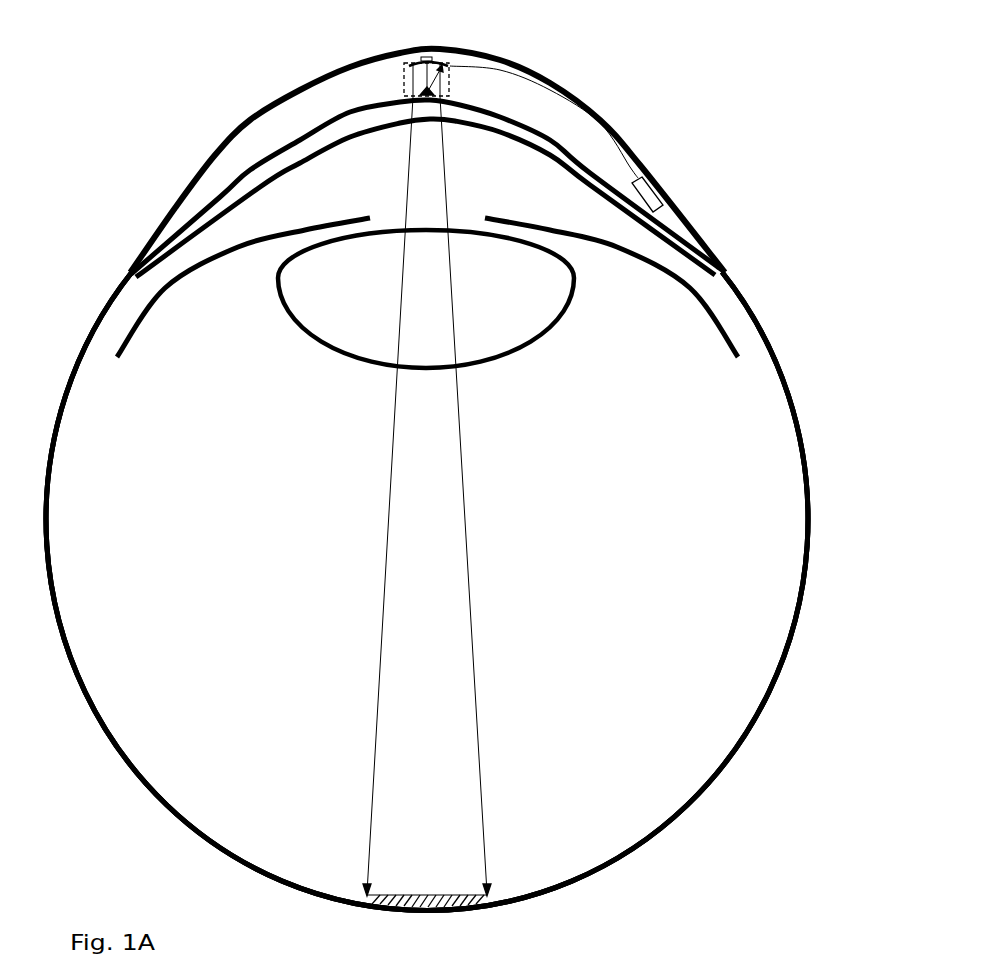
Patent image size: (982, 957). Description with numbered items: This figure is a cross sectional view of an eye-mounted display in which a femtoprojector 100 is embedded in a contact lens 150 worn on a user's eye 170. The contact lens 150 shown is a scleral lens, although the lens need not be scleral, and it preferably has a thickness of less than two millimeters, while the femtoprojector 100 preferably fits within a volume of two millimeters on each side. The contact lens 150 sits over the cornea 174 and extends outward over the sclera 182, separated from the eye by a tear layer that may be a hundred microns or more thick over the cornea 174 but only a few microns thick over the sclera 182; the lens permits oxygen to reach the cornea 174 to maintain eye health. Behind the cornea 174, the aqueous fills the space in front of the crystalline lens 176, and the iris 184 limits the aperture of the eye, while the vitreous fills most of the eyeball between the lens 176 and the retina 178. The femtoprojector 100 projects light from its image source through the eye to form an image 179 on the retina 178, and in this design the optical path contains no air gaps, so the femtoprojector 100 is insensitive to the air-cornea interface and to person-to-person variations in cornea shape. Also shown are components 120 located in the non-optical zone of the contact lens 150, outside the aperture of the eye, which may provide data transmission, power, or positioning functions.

The femtoprojector 100 is at (452, 74).
The components 120 is at (662, 188).
The contact lens 150 is at (427, 159).
The eye 170 is at (646, 427).
The cornea 174 is at (406, 167).
The crystalline lens 176 is at (387, 306).
The retina 178 is at (202, 832).
The image 179 is at (442, 895).
The sclera 182 is at (427, 568).
The iris 184 is at (562, 217).